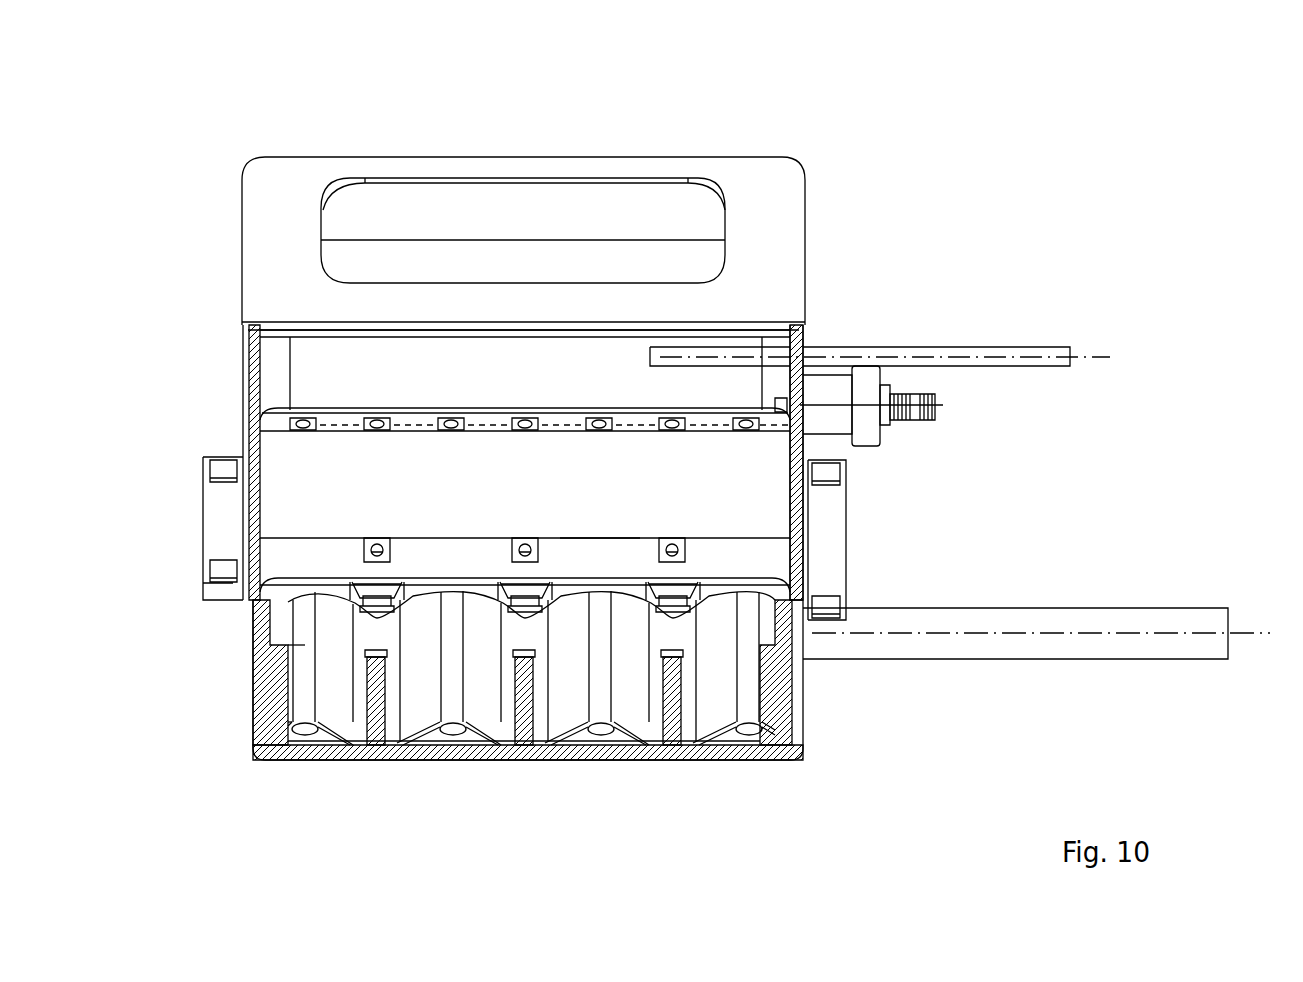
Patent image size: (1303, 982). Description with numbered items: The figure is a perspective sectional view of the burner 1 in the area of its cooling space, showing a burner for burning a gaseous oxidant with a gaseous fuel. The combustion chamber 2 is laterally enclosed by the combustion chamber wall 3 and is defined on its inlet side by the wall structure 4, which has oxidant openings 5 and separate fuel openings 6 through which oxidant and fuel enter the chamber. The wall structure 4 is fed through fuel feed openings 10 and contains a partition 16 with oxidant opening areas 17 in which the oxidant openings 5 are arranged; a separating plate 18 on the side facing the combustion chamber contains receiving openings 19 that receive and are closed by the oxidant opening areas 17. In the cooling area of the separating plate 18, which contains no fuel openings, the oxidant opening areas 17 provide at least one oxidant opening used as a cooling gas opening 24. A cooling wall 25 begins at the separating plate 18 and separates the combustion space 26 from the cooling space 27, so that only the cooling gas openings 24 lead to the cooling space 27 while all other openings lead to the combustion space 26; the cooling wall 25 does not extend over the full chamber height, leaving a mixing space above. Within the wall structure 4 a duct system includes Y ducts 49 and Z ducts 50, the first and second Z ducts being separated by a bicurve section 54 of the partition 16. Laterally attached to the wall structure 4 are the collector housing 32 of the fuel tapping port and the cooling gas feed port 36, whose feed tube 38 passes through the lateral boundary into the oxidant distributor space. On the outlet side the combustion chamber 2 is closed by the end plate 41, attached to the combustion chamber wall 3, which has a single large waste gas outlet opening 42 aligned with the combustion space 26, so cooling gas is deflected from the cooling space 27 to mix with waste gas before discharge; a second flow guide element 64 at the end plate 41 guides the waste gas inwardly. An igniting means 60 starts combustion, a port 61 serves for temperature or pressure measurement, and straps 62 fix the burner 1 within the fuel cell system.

The burner 1 is at (999, 233).
The combustion chamber 2 is at (243, 351).
The combustion chamber wall 3 is at (245, 386).
The wall structure 4 is at (203, 520).
The oxidant openings 5 is at (377, 419).
The fuel openings 6 is at (412, 428).
The fuel feed openings 10 is at (301, 736).
The partition 16 is at (694, 743).
The oxidant opening areas 17 is at (457, 419).
The separating plate 18 is at (450, 553).
The receiving openings 19 is at (522, 417).
The cooling gas opening 24 is at (377, 546).
The cooling wall 25 is at (617, 492).
The combustion space 26 is at (306, 368).
The cooling space 27 is at (290, 504).
The collector housing 32 is at (388, 764).
The cooling gas feed port 36 is at (1168, 608).
The feed tube 38 is at (1138, 622).
The end plate 41 is at (522, 157).
The waste gas outlet opening 42 is at (325, 228).
The Y ducts 49 is at (327, 630).
The Z ducts 50 is at (308, 688).
The bicurve section 54 is at (345, 712).
The igniting means 60 is at (873, 437).
The port 61 is at (915, 345).
The straps 62 is at (223, 470).
The second flow guide element 64 is at (585, 210).